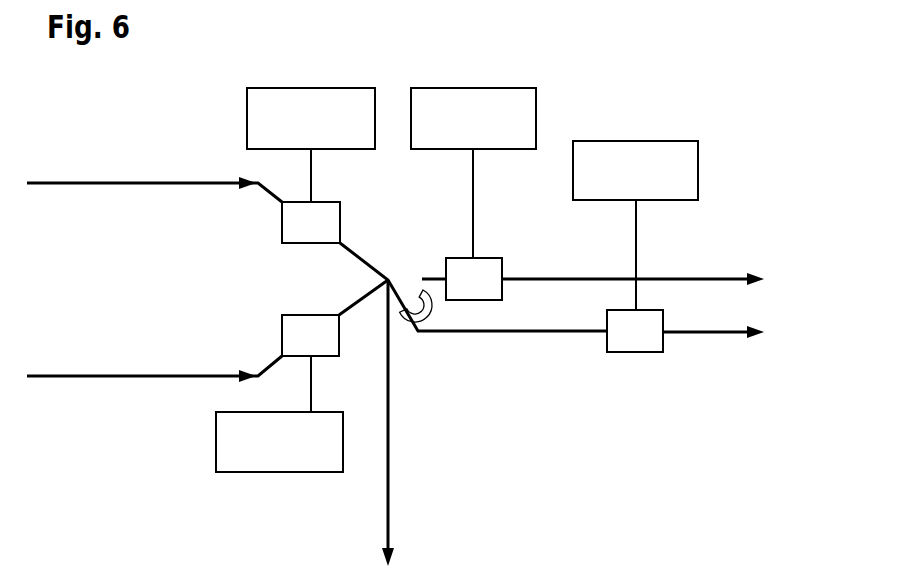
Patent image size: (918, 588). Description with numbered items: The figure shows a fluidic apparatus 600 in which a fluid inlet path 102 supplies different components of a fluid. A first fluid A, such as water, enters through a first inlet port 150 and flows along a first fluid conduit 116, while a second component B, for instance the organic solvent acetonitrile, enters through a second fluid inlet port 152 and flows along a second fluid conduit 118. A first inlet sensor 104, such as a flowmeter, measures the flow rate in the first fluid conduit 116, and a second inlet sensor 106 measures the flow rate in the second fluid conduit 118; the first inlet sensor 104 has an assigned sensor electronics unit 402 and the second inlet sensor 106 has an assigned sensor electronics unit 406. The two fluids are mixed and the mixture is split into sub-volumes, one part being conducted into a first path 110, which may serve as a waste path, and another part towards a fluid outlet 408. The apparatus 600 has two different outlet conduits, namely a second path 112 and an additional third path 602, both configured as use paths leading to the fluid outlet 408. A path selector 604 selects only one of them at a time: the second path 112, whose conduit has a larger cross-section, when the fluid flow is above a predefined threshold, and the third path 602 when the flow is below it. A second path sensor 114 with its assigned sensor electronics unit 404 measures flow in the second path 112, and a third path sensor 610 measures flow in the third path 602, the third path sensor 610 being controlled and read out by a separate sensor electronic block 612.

The fluidic apparatus 600 is at (727, 83).
The sensor electronics unit 402 is at (312, 88).
The sensor electronics unit 404 is at (473, 88).
The sensor electronics unit 406 is at (280, 472).
The sensor electronic block 612 is at (636, 141).
The first inlet port 150 is at (27, 183).
The second fluid inlet port 152 is at (30, 377).
The first fluid conduit 116 is at (112, 183).
The second fluid conduit 118 is at (115, 377).
The fluid inlet path 102 is at (151, 198).
The first inlet sensor 104 is at (282, 221).
The second inlet sensor 106 is at (282, 335).
The path selector 604 is at (409, 275).
The second path sensor 114 is at (487, 258).
The second path 112 is at (692, 279).
The fluid outlet 408 is at (747, 279).
The first path 110 is at (403, 469).
The third path sensor 610 is at (636, 352).
The third path 602 is at (696, 340).